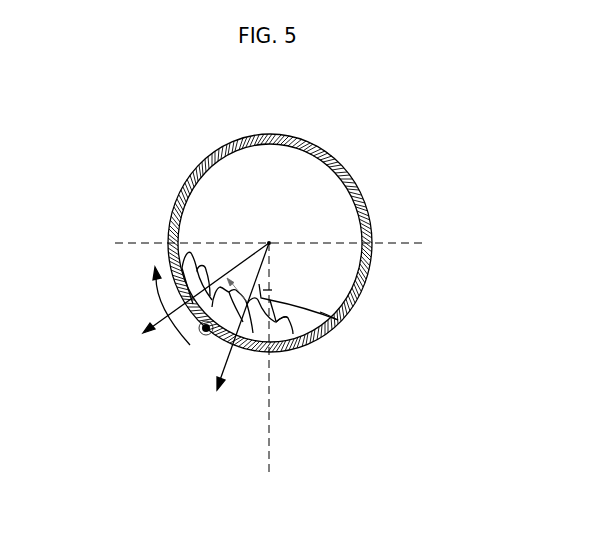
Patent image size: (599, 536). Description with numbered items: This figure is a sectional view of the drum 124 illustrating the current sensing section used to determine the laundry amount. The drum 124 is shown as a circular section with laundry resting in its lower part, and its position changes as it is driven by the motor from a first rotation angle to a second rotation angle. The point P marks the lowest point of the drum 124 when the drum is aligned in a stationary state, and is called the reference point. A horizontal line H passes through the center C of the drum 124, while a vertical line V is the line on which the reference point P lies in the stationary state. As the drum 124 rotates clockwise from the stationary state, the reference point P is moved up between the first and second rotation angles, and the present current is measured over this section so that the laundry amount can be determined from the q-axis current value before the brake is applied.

The drum 124 is at (335, 157).
The reference point P is at (206, 336).
The center of the drum C is at (277, 232).
The horizontal line H is at (261, 257).
The vertical line V is at (282, 373).